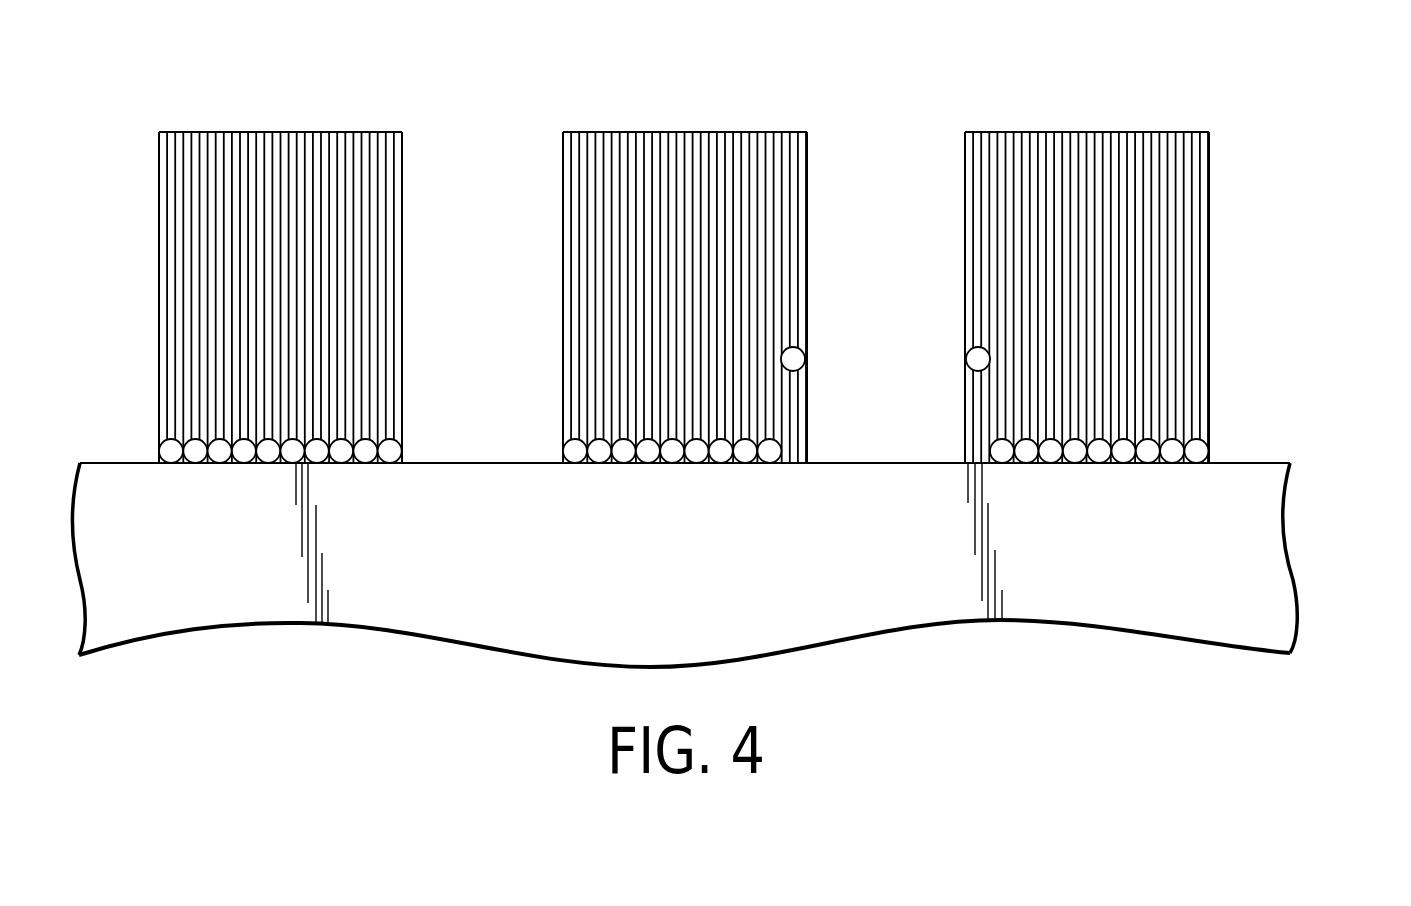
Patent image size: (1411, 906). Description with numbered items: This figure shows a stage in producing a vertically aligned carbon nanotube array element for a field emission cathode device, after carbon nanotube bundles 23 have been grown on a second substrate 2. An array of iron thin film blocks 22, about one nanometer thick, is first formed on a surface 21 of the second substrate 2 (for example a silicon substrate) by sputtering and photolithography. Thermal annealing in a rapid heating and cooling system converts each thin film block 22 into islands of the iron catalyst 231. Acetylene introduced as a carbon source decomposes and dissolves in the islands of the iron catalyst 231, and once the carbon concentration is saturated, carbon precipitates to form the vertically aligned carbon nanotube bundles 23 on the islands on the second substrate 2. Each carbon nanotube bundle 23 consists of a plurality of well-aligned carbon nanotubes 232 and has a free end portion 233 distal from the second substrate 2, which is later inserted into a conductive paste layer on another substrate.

The second substrate 2 is at (1278, 607).
The surface of the second substrate 21 is at (1263, 462).
The thin film block 22 is at (962, 454).
The carbon nanotube bundle 23 is at (747, 244).
The island of iron catalyst 231 is at (1172, 450).
The carbon nanotube 232 is at (1188, 198).
The free end portion 233 is at (1196, 126).